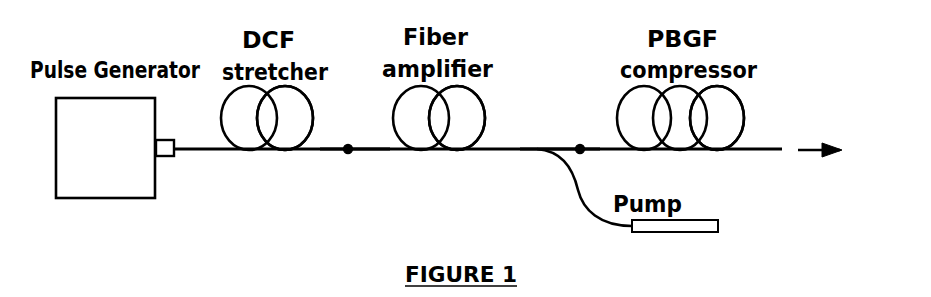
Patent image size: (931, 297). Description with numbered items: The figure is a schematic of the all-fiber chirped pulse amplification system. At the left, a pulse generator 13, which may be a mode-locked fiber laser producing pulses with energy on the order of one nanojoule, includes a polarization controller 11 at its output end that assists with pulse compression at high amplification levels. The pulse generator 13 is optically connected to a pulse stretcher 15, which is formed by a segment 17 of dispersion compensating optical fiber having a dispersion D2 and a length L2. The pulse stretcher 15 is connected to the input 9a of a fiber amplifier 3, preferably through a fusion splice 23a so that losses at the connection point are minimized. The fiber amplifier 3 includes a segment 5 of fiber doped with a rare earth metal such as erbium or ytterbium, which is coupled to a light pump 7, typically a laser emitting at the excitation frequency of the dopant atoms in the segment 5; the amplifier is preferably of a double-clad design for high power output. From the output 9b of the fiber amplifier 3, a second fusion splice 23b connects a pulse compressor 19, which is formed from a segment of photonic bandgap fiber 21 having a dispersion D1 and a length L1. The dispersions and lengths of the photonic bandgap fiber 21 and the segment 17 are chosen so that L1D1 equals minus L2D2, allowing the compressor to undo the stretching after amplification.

The pulse generator 13 is at (106, 162).
The polarization controller 11 is at (167, 151).
The pulse stretcher 15 is at (268, 181).
The segment of dispersion compensating optical fiber 17 is at (302, 100).
The fusion splice 23a is at (346, 155).
The input 9a is at (362, 148).
The fiber amplifier 3 is at (441, 180).
The segment of fiber doped with a rare earth metal 5 is at (474, 96).
The output 9b is at (561, 147).
The fusion splice 23b is at (583, 155).
The light pump 7 is at (670, 232).
The pulse compressor 19 is at (682, 178).
The photonic bandgap fiber 21 is at (736, 96).